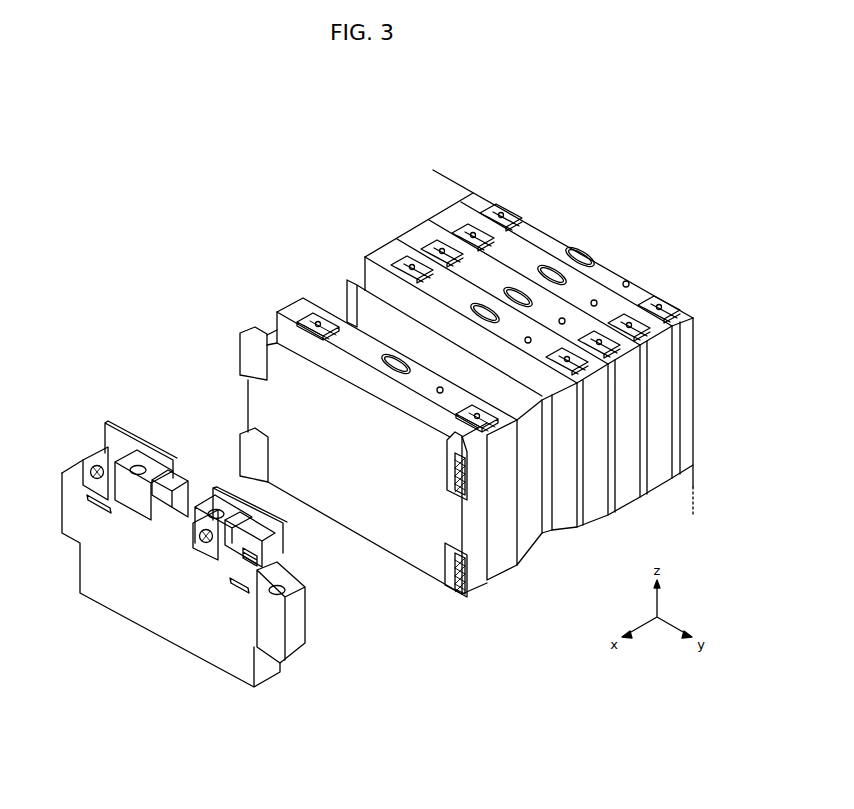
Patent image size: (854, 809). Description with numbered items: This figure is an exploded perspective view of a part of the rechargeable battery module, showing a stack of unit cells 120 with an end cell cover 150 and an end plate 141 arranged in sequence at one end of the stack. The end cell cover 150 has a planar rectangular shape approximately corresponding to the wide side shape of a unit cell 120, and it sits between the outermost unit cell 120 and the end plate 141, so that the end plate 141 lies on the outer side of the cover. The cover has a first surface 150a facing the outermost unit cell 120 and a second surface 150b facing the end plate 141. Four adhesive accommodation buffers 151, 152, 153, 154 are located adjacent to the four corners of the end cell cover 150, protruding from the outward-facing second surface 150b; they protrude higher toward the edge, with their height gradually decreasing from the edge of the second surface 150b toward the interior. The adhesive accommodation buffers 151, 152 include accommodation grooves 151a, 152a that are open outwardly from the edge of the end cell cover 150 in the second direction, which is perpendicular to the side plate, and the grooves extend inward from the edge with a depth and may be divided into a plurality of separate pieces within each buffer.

The unit cell 120 is at (513, 568).
The end plate 141 is at (160, 627).
The end cell cover 150 is at (384, 456).
The first surface 150a is at (298, 340).
The second surface 150b is at (248, 403).
The adhesive accommodation buffer 151 is at (482, 524).
The accommodation groove 151a is at (467, 487).
The adhesive accommodation buffer 152 is at (467, 590).
The accommodation groove 152a is at (467, 587).
The adhesive accommodation buffer 153 is at (240, 452).
The adhesive accommodation buffer 154 is at (240, 354).